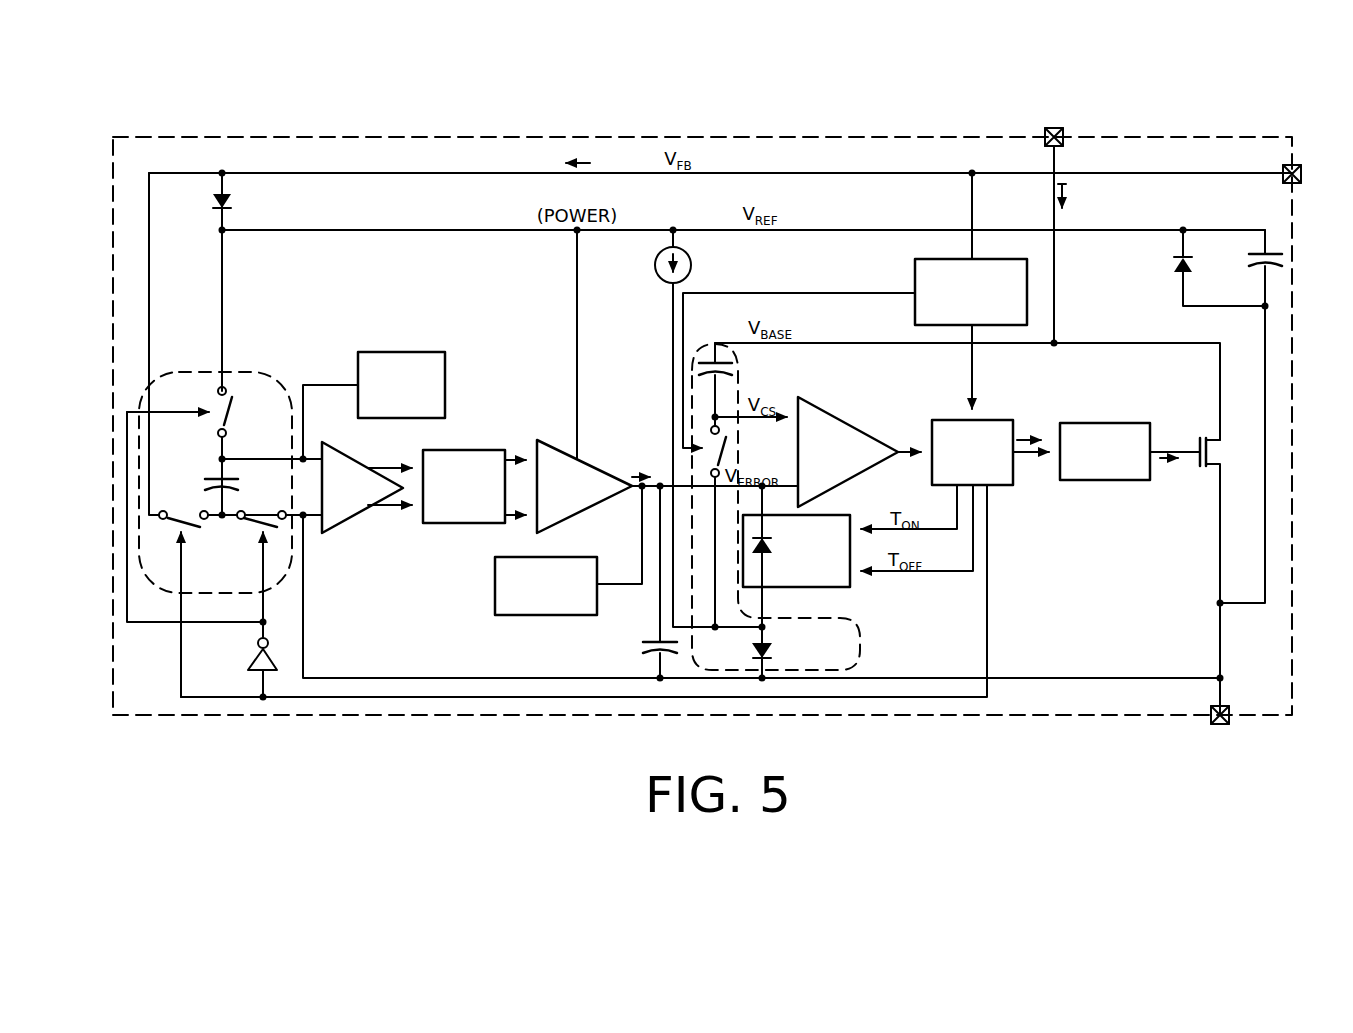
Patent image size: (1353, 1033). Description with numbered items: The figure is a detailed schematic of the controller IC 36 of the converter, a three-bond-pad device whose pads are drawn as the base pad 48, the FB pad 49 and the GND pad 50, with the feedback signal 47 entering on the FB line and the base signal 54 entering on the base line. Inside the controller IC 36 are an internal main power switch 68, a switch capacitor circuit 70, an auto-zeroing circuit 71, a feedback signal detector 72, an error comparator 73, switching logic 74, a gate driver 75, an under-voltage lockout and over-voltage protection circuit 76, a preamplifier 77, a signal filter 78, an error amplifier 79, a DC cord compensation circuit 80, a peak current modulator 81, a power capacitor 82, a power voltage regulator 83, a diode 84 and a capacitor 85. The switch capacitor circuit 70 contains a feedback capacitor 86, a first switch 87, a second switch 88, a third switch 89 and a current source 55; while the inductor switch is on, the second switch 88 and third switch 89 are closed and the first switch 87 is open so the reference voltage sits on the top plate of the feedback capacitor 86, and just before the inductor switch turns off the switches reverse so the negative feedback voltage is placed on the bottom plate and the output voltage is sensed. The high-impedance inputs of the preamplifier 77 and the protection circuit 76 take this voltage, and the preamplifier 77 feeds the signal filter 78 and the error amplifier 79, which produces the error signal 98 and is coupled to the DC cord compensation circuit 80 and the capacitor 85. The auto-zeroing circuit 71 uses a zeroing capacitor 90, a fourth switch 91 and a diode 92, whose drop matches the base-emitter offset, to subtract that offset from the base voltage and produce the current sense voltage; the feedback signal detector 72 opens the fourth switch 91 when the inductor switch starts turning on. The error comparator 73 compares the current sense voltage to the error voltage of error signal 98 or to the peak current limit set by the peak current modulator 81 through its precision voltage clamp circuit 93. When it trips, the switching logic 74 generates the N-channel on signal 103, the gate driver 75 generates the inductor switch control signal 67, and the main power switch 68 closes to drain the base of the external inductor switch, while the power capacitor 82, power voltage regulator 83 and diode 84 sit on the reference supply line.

The controller IC 36 is at (830, 137).
The feedback signal 47 is at (580, 163).
The base terminal 48 is at (1056, 128).
The feedback terminal 49 is at (1301, 180).
The ground terminal 50 is at (1214, 725).
The base signal 54 is at (1067, 200).
The current source 55 is at (695, 260).
The inductor switch control signal 67 is at (1180, 460).
The main power switch 68 is at (1222, 451).
The switch capacitor circuit 70 is at (274, 378).
The auto-zeroing circuit 71 is at (871, 634).
The feedback signal detector 72 is at (915, 270).
The error comparator 73 is at (854, 430).
The switching logic 74 is at (950, 418).
The gate driver 75 is at (1108, 423).
The under-voltage lockout and over-voltage protection circuit 76 is at (410, 351).
The preamplifier 77 is at (364, 530).
The signal filter 78 is at (480, 450).
The error amplifier 79 is at (590, 521).
The DC cord compensation circuit 80 is at (544, 617).
The peak current modulator 81 is at (840, 515).
The power capacitor 82 is at (1250, 264).
The power voltage regulator 83 is at (1174, 264).
The diode 84 is at (232, 206).
The capacitor 85 is at (646, 652).
The feedback capacitor 86 is at (204, 484).
The first switch 87 is at (173, 527).
The second switch 88 is at (263, 516).
The third switch 89 is at (234, 416).
The zeroing capacitor 90 is at (735, 376).
The fourth switch 91 is at (760, 442).
The diode 92 is at (771, 651).
The precision voltage clamp circuit 93 is at (769, 544).
The error signal 98 is at (638, 476).
The N-channel on signal 103 is at (1032, 440).